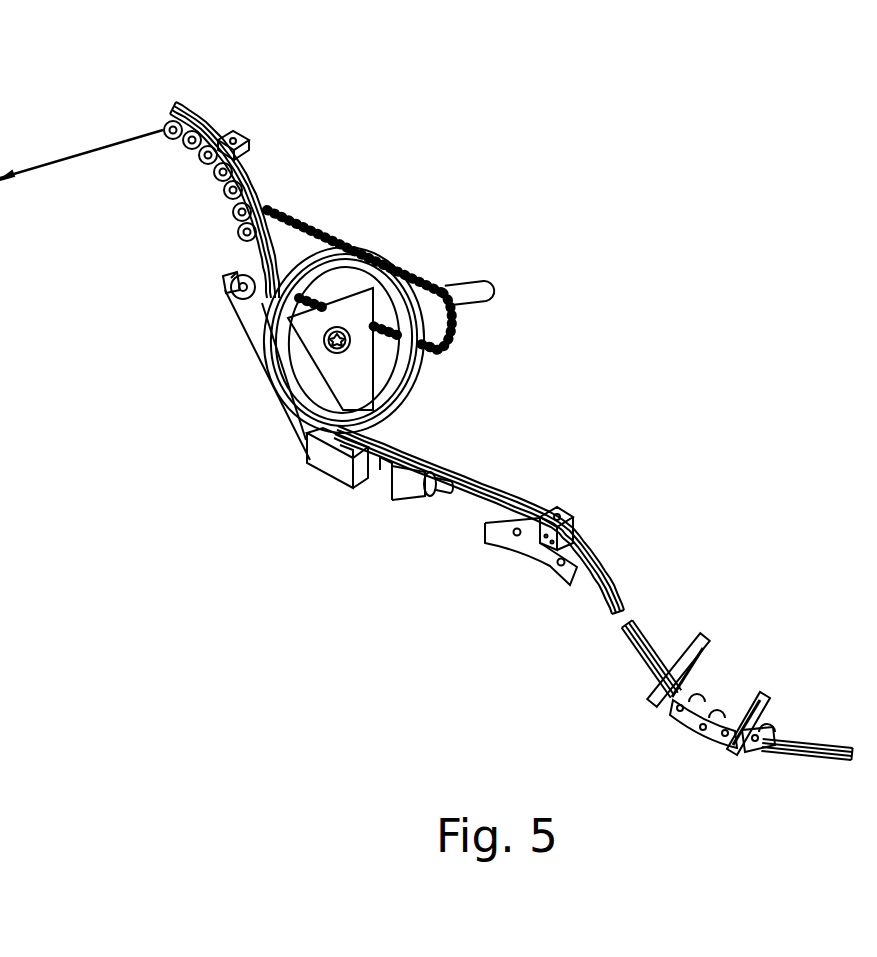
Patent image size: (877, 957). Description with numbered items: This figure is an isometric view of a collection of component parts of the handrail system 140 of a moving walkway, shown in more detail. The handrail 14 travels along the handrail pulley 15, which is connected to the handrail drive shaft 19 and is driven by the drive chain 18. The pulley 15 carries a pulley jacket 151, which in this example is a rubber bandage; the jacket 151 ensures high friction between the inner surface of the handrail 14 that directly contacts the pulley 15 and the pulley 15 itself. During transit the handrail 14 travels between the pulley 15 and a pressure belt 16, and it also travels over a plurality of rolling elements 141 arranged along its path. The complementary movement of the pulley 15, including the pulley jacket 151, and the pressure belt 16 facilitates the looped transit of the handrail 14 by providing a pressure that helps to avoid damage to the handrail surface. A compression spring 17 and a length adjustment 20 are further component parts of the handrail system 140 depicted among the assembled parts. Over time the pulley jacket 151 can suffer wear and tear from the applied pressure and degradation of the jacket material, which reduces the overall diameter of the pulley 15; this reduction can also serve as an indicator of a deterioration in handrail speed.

The handrail 14 is at (158, 108).
The rolling element 141 is at (205, 168).
The handrail pulley 15 is at (346, 316).
The pulley jacket 151 is at (414, 374).
The pressure belt 16 is at (245, 337).
The compression spring 17 is at (417, 479).
The drive chain 18 is at (318, 226).
The drive shaft 19 is at (469, 289).
The length adjustment 20 is at (683, 718).
The handrail system 140 is at (628, 196).